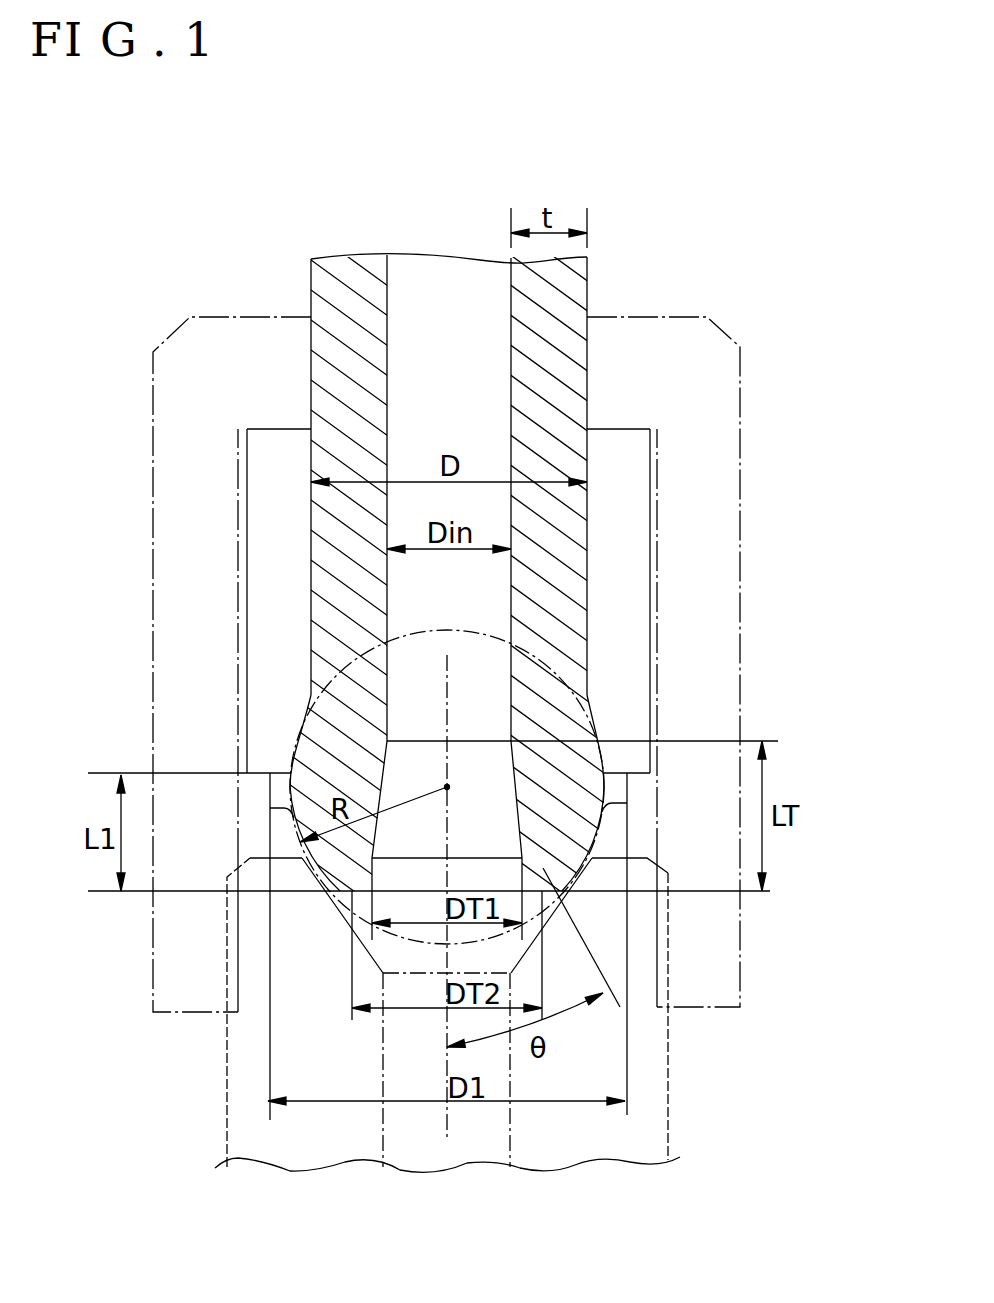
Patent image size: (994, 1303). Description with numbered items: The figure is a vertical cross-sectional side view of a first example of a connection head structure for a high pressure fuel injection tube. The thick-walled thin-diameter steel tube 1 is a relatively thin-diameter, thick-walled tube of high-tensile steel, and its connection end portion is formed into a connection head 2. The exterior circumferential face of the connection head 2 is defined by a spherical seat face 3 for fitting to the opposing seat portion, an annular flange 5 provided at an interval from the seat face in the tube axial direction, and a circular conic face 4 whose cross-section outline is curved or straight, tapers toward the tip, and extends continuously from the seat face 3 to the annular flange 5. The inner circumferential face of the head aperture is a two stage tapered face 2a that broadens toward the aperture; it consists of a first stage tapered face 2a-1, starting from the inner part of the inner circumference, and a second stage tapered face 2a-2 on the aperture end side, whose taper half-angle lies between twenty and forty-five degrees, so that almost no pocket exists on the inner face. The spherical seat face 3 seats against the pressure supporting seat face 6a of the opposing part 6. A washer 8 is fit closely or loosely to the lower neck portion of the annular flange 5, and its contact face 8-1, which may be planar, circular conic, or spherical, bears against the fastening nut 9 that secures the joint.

The thick-walled thin-diameter steel tube 1 is at (357, 262).
The connection head 2 is at (290, 877).
The two stage tapered face 2a is at (497, 808).
The first stage tapered face 2a-1 is at (382, 780).
The second stage tapered face 2a-2 is at (375, 882).
The spherical seat face 3 is at (583, 860).
The circular conic face 4 is at (603, 830).
The annular flange 5 is at (628, 788).
The opposing part 6 is at (650, 1081).
The seat face 6a is at (530, 945).
The washer 8 is at (633, 513).
The contact face 8-1 is at (617, 427).
The fastening nut 9 is at (708, 623).